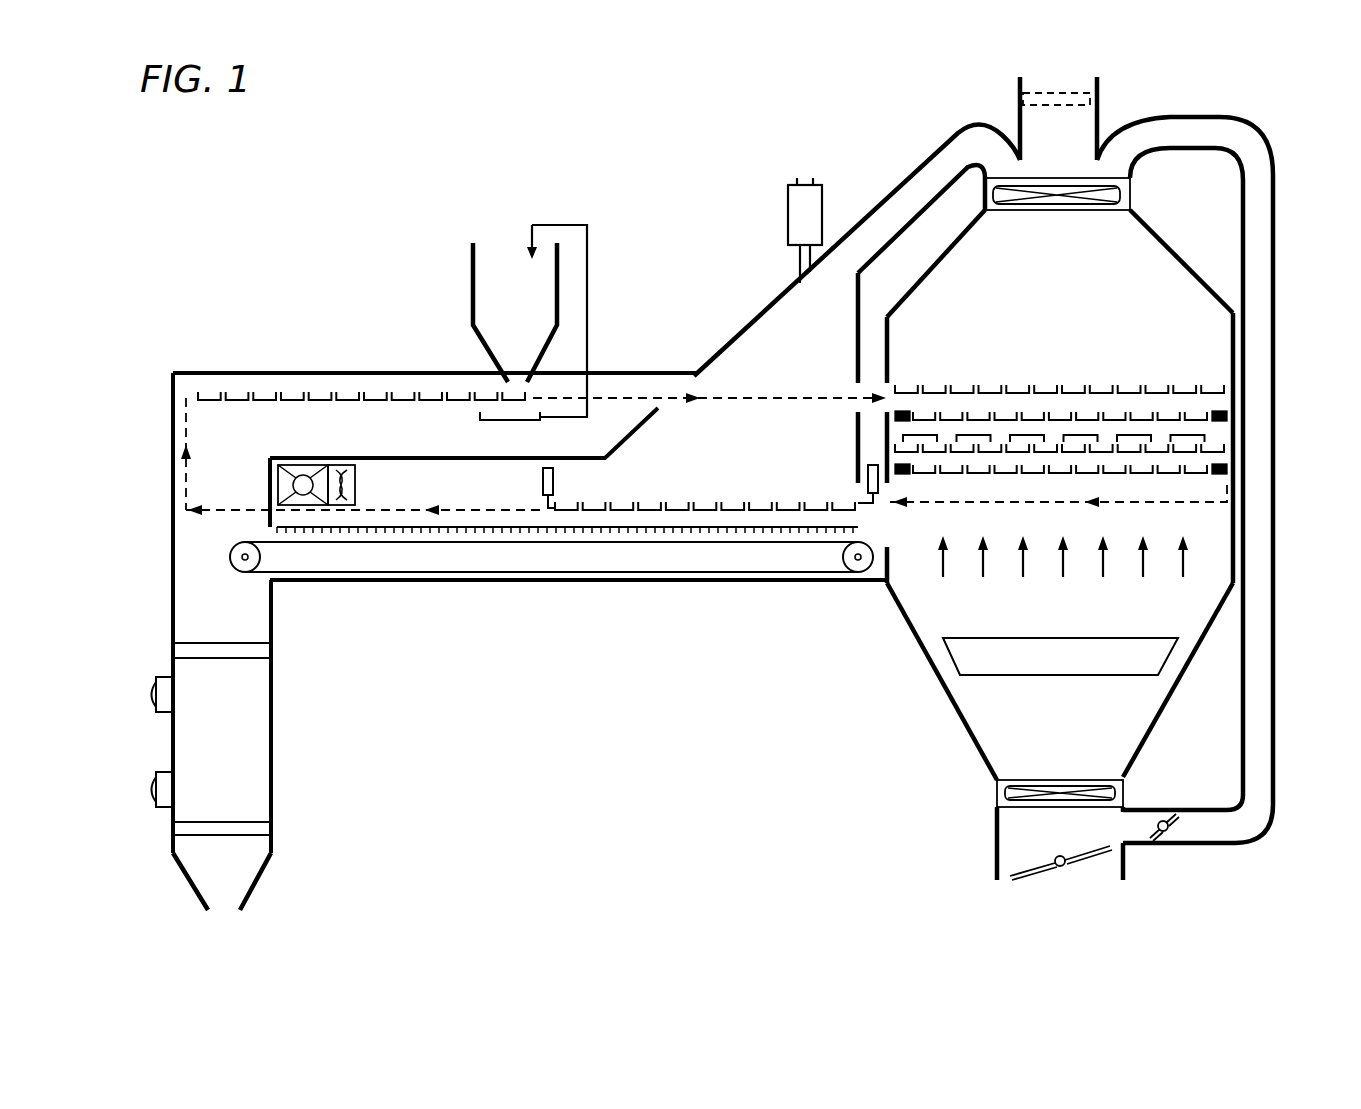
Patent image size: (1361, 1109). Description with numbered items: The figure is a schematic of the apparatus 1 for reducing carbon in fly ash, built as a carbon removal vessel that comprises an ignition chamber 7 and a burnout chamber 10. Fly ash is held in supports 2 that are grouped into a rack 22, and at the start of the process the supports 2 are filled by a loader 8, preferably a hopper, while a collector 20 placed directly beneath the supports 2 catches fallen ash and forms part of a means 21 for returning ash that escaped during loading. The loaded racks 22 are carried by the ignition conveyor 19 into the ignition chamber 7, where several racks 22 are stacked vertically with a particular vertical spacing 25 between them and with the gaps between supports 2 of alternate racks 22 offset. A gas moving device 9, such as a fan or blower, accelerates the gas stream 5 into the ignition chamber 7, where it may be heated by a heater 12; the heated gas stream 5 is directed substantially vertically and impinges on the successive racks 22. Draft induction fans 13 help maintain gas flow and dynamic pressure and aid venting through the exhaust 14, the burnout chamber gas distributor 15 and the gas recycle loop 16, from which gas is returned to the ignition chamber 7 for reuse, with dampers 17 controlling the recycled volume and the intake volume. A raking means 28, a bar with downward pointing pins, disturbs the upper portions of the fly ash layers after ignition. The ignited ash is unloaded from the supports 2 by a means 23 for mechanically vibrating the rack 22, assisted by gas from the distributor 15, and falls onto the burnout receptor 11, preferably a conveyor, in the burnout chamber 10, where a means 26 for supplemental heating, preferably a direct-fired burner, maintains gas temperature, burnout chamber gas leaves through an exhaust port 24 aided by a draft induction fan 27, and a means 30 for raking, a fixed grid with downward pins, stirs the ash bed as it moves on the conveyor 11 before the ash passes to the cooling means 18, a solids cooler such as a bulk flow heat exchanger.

The apparatus 1 is at (882, 734).
The supports 2 is at (1048, 392).
The gas stream 5 is at (1183, 564).
The ignition chamber 7 is at (1193, 263).
The loader 8 is at (473, 267).
The gas moving device 9 is at (1017, 797).
The burnout chamber 10 is at (623, 424).
The burnout receptor 11 is at (622, 556).
The heater 12 is at (967, 660).
The fans 13 is at (1113, 195).
The exhaust 14 is at (1040, 102).
The burnout chamber gas distributor 15 is at (919, 180).
The gas recycle loop 16 is at (1278, 343).
The damper 17 is at (1057, 861).
The means for cooling 18 is at (252, 748).
The ignition conveyor 19 is at (183, 462).
The collector 20 is at (493, 420).
The means for returning ash 21 is at (587, 288).
The rack 22 is at (322, 385).
The means for mechanically vibrating the rack 23 is at (557, 479).
The exhaust port 24 is at (298, 465).
The vertical spacing 25 is at (1217, 406).
The means for supplemental heating 26 is at (800, 212).
The draft induction fan 27 is at (345, 465).
The means for raking 28 is at (1223, 437).
The means for raking or stirring 30 is at (473, 527).